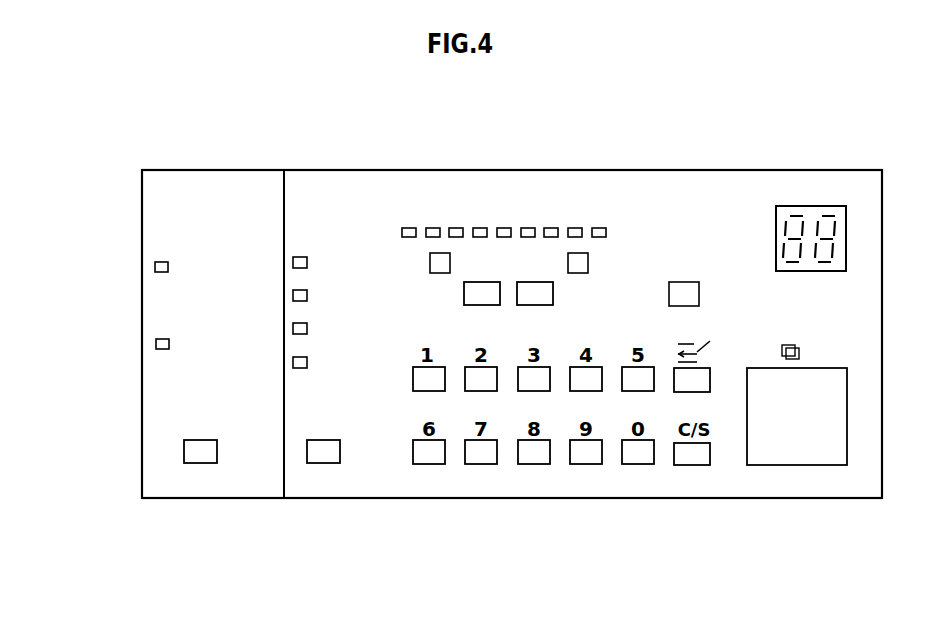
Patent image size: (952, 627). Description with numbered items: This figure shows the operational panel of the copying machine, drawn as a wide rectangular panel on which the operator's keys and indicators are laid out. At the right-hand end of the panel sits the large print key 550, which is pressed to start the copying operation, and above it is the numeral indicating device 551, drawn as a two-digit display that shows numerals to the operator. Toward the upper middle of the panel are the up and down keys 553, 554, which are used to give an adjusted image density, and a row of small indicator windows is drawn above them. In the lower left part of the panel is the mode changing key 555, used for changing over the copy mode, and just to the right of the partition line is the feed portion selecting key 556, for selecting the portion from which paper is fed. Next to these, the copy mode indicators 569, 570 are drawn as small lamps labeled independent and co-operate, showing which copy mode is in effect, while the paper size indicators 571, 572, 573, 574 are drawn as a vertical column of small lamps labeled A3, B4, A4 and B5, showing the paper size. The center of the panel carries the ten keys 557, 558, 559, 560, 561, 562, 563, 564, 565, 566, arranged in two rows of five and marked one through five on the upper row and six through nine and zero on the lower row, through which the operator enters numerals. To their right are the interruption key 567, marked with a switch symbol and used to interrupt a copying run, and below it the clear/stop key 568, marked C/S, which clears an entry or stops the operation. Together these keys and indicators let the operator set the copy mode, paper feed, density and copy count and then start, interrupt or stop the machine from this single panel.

The print key 550 is at (833, 401).
The numeral indicating device 551 is at (846, 228).
The up key 553 is at (468, 285).
The down key 554 is at (537, 287).
The mode changing key 555 is at (192, 450).
The feed portion selecting key 556 is at (333, 452).
The ten key 557 is at (422, 380).
The ten key 558 is at (475, 380).
The ten key 559 is at (530, 383).
The ten key 560 is at (597, 387).
The ten key 561 is at (650, 387).
The ten key 562 is at (425, 455).
The ten key 563 is at (482, 455).
The ten key 564 is at (540, 457).
The ten key 565 is at (585, 457).
The ten key 566 is at (638, 458).
The interruption key 567 is at (705, 385).
The clear/stop key 568 is at (695, 458).
The copy mode indicator 569 is at (155, 267).
The copy mode indicator 570 is at (156, 345).
The paper size indicator 571 is at (298, 260).
The paper size indicator 572 is at (297, 293).
The paper size indicator 573 is at (298, 335).
The paper size indicator 574 is at (300, 369).